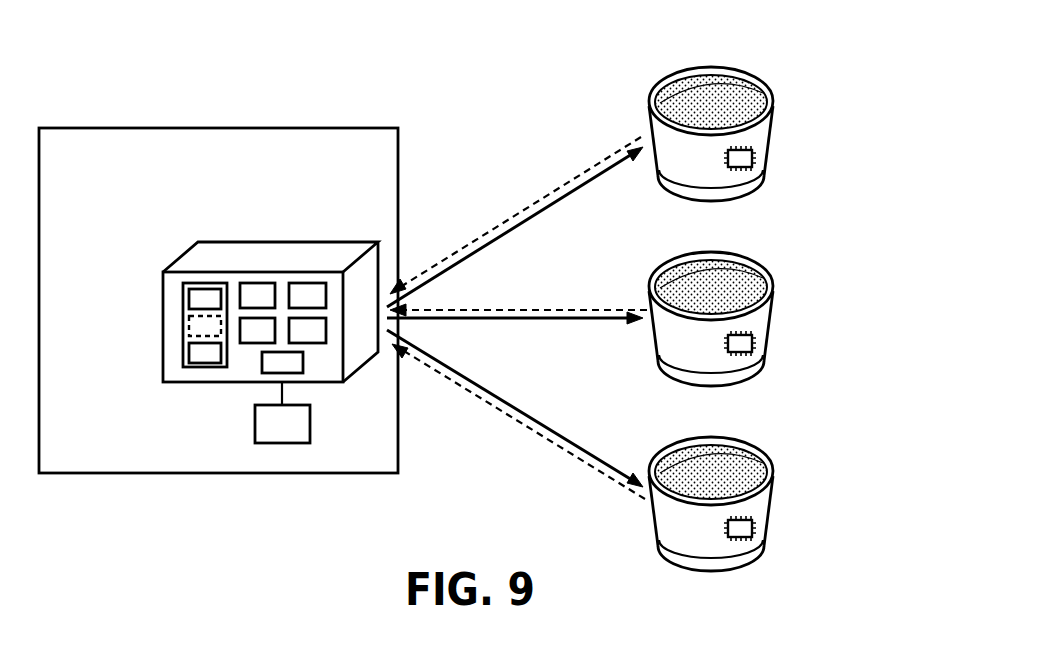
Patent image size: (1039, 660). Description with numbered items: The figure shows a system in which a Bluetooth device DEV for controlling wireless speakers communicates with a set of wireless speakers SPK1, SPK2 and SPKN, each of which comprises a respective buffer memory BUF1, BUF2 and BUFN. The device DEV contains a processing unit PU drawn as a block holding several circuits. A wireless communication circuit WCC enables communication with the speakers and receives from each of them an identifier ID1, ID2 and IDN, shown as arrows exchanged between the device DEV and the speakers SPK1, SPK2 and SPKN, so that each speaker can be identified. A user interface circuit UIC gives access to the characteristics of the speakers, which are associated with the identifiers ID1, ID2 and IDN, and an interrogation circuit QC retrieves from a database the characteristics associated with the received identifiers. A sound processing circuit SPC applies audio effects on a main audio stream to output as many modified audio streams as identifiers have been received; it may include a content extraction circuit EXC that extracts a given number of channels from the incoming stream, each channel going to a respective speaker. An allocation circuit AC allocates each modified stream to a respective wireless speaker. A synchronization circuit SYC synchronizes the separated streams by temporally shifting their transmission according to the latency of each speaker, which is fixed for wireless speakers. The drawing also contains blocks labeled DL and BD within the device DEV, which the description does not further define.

The Bluetooth device DEV is at (88, 146).
The processing unit PU is at (215, 256).
The content extraction circuit EXC is at (200, 297).
The sound processing circuit SPC is at (188, 322).
The data link component DL is at (200, 350).
The interrogation circuit QC is at (258, 298).
The wireless communication circuit WCC is at (318, 300).
The user interface circuit UIC is at (250, 337).
The allocation circuit AC is at (313, 337).
The synchronization circuit SYC is at (270, 365).
The buffer data BD is at (282, 412).
The identifier ID1 is at (515, 222).
The identifier ID2 is at (517, 299).
The identifier IDN is at (516, 414).
The wireless speaker SPK1 is at (777, 80).
The wireless speaker SPK2 is at (783, 295).
The wireless speaker SPKN is at (784, 480).
The buffer memory BUF1 is at (742, 155).
The buffer memory BUF2 is at (811, 331).
The buffer memory BUFN is at (812, 516).